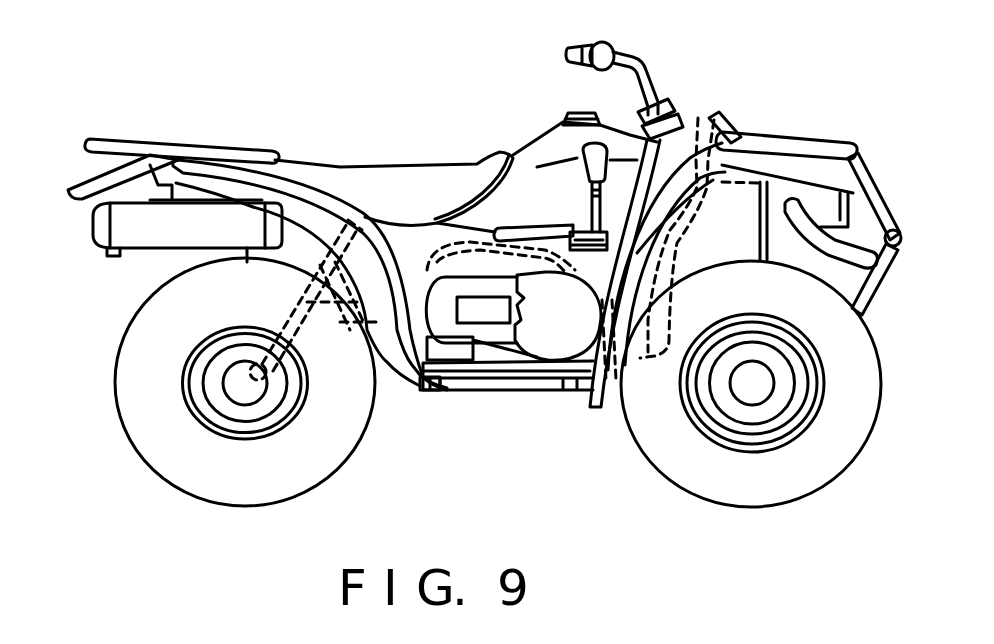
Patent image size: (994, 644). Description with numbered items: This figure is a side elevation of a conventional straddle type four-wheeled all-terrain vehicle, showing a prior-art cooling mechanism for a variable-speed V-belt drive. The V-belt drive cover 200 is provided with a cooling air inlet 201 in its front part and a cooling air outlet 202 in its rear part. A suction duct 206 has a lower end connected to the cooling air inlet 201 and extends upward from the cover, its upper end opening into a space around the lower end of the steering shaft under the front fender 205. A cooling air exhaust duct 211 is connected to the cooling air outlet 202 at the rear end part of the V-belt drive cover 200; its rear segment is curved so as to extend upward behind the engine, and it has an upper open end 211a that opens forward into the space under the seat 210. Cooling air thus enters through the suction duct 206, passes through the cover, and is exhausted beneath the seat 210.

The V-belt drive cover 200 is at (530, 343).
The cooling air inlet 201 is at (608, 398).
The cooling air outlet 202 is at (387, 392).
The front fender 205 is at (807, 163).
The suction duct 206 is at (697, 118).
The seat 210 is at (337, 172).
The cooling air exhaust duct 211 is at (332, 320).
The upper open end 211a is at (365, 208).